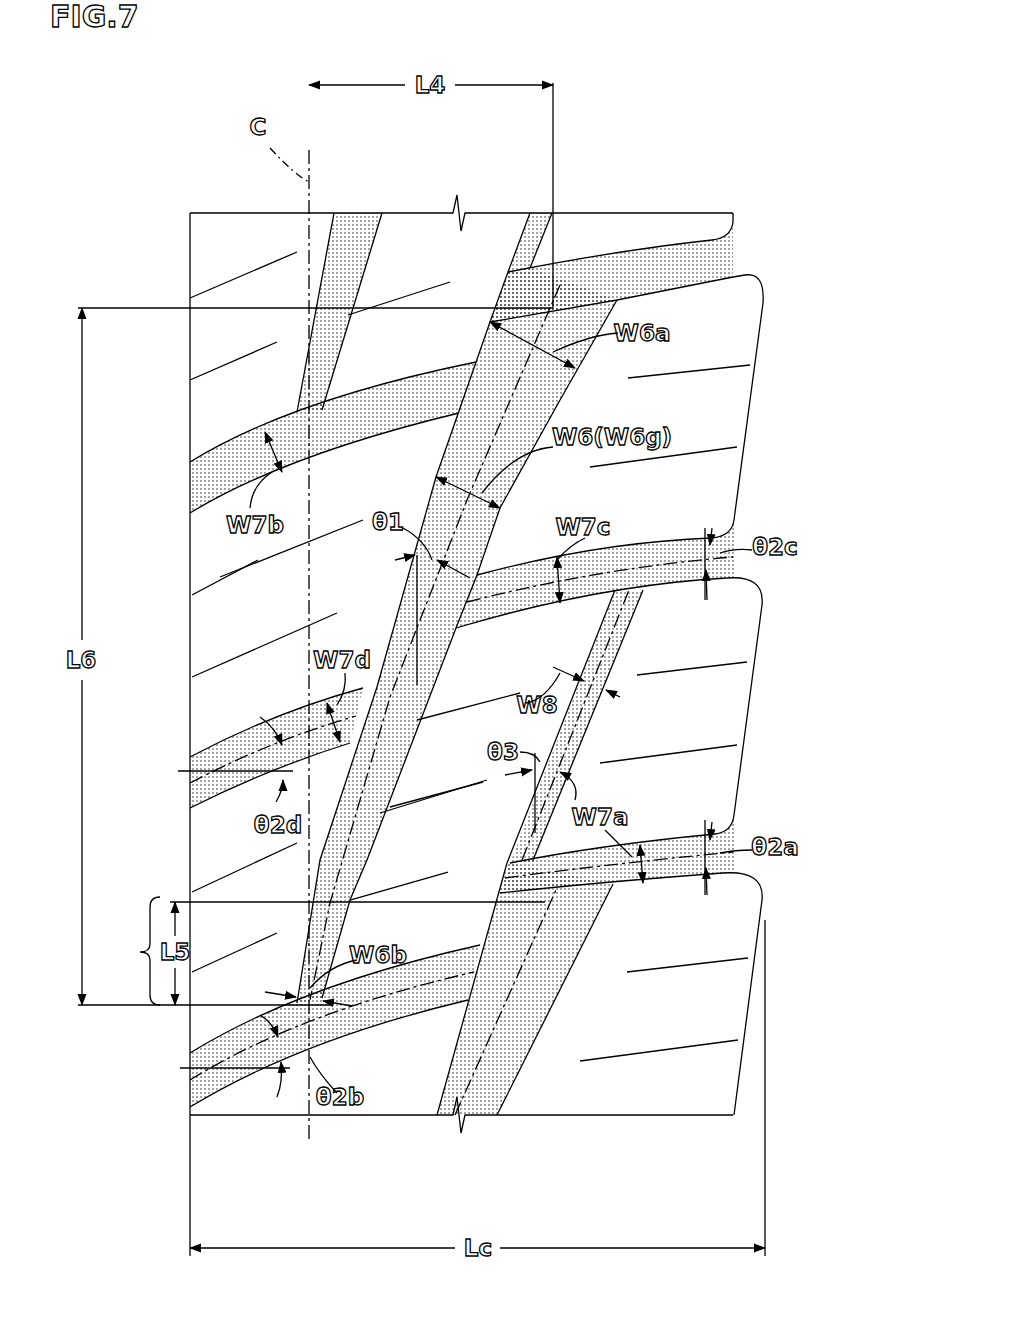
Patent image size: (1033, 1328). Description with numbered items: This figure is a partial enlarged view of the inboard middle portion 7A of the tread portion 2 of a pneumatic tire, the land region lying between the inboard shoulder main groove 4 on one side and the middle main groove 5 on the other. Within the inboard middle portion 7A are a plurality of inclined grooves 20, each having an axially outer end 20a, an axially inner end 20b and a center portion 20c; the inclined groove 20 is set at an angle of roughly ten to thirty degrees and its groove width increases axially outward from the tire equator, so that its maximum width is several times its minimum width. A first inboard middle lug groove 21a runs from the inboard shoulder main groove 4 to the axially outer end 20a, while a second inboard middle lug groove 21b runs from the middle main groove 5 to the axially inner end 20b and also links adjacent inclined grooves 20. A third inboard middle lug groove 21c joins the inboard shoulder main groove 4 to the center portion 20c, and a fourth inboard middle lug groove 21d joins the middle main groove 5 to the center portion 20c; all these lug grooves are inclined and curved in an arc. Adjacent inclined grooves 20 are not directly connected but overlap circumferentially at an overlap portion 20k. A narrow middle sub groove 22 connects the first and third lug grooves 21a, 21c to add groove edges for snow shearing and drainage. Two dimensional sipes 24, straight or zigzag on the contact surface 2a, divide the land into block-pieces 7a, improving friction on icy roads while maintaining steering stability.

The tread portion 2 is at (634, 130).
The contact surface 2a is at (573, 228).
The inboard shoulder main groove 4 is at (790, 1014).
The middle main groove 5 is at (124, 510).
The inboard middle portion 7A is at (500, 190).
The block-pieces 7a is at (210, 647).
The inclined groove 20 is at (348, 245).
The axially outer end 20a is at (578, 320).
The axially inner end 20b is at (337, 913).
The center portion 20c is at (403, 618).
The overlap portion 20k is at (123, 951).
The first inboard middle lug groove 21a is at (645, 272).
The second inboard middle lug groove 21b is at (230, 457).
The third inboard middle lug groove 21c is at (647, 547).
The fourth inboard middle lug groove 21d is at (210, 790).
The middle sub groove 22 is at (587, 732).
The two dimensional sipe 24 is at (410, 293).